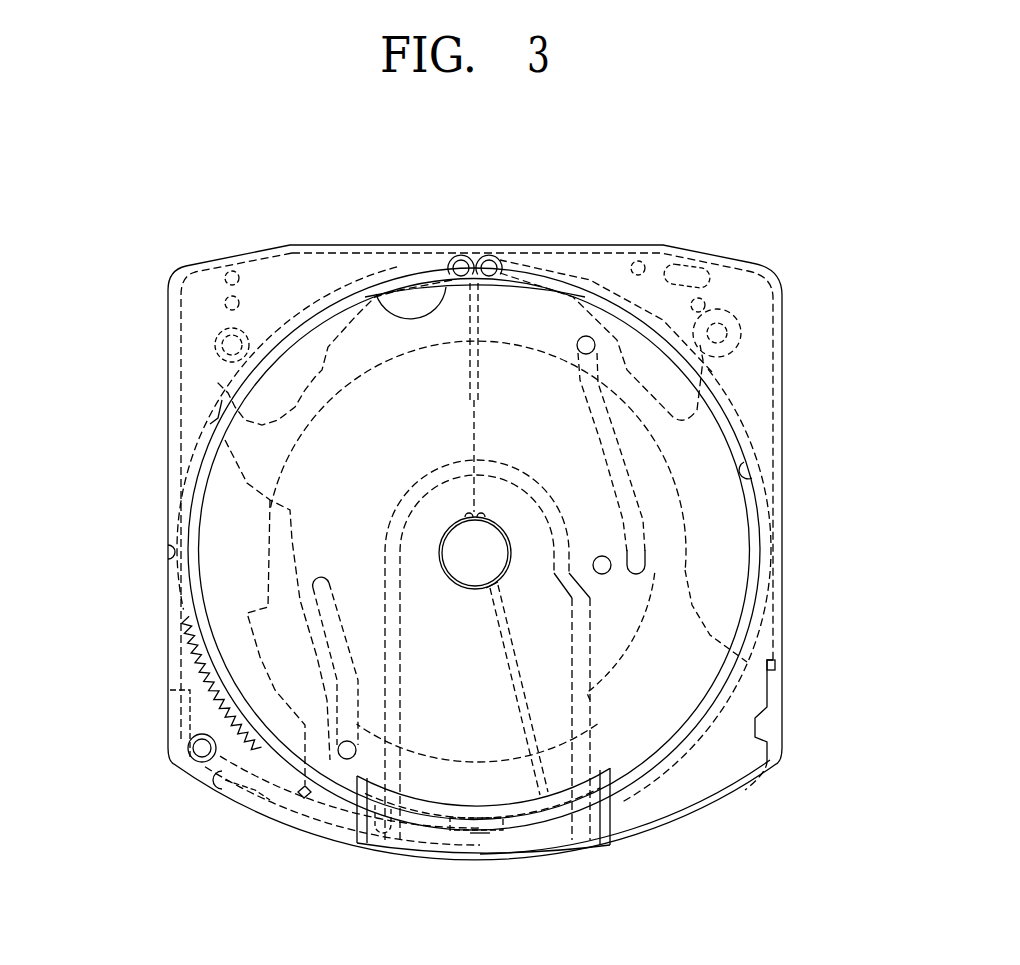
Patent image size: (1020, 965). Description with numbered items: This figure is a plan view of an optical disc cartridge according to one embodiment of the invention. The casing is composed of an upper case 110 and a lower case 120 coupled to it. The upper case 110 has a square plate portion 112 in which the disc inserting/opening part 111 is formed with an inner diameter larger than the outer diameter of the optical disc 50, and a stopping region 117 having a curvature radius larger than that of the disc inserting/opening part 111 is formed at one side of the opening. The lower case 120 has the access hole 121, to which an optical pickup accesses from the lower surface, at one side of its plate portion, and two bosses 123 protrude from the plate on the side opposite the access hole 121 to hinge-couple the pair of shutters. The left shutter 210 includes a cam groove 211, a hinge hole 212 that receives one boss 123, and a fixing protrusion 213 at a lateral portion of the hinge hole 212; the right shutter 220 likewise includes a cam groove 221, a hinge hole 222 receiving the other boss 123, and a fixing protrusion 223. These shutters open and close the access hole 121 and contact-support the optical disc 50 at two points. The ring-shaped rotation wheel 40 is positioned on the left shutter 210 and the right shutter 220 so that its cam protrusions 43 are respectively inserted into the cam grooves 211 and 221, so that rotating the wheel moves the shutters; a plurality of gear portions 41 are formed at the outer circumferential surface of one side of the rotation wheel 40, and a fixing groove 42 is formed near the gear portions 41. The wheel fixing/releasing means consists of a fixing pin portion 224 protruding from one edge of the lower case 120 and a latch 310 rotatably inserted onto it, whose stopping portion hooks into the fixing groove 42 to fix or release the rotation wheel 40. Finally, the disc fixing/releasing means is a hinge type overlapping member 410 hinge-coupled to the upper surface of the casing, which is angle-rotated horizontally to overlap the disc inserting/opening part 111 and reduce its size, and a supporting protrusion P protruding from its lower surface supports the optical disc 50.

The upper case 110 is at (736, 257).
The lower case 120 is at (477, 549).
The disc inserting/opening part 111 is at (752, 485).
The plate portion 112 is at (723, 768).
The stopping region 117 is at (400, 297).
The access hole 121 is at (627, 650).
The bosses 123 is at (454, 266).
The rotation wheel 40 is at (172, 622).
The gear portions 41 is at (245, 695).
The fixing groove 42 is at (306, 800).
The cam protrusions 43 is at (589, 336).
The optical disc 50 is at (735, 455).
The left shutter 210 is at (248, 489).
The cam groove 211 is at (347, 690).
The hinge hole 212 is at (461, 260).
The fixing protrusion 213 is at (215, 402).
The right shutter 220 is at (650, 556).
The cam groove 221 is at (632, 498).
The hinge hole 222 is at (489, 260).
The fixing protrusion 223 is at (725, 372).
The fixing pin portion 224 is at (188, 746).
The latch 310 is at (188, 774).
The hinge type overlapping member 410 is at (612, 826).
The supporting protrusion P is at (478, 836).